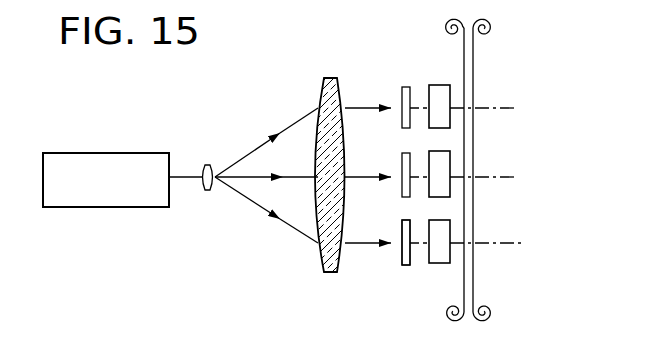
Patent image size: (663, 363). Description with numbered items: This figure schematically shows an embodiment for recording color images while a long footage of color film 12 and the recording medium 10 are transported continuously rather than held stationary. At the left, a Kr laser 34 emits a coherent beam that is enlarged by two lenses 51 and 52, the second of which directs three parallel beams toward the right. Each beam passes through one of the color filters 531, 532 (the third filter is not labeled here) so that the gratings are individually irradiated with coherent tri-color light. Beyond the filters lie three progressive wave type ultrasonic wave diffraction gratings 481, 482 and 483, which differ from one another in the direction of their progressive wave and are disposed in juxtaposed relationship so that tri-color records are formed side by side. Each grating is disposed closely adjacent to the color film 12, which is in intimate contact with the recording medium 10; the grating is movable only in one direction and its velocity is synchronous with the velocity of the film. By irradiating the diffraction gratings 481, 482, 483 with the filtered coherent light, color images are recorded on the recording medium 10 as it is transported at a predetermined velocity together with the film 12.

The recording medium 10 is at (494, 305).
The color film 12 is at (447, 315).
The Kr laser 34 is at (83, 196).
The lens 51 is at (207, 191).
The lens 52 is at (322, 265).
The ultrasonic wave diffraction grating 481 is at (440, 258).
The ultrasonic wave diffraction grating 482 is at (436, 156).
The ultrasonic wave diffraction grating 483 is at (438, 92).
The color filter 531 is at (403, 256).
The color filter 532 is at (403, 92).